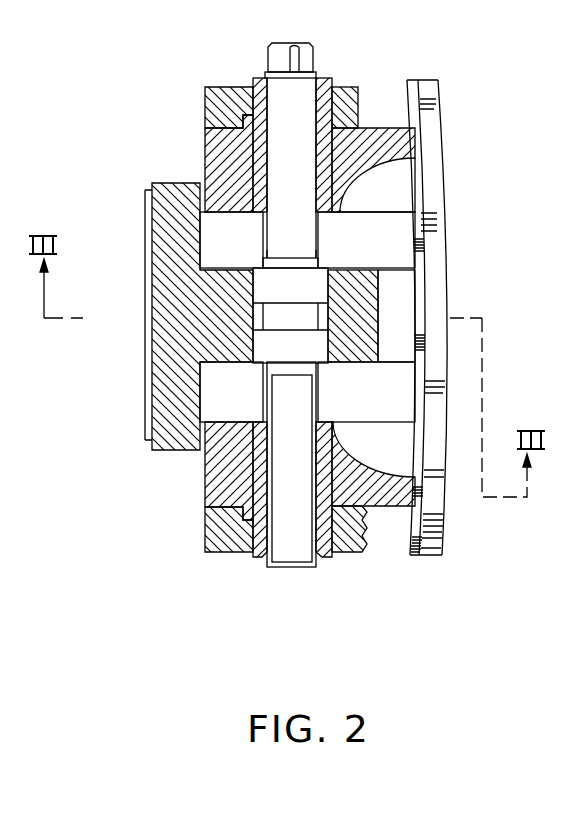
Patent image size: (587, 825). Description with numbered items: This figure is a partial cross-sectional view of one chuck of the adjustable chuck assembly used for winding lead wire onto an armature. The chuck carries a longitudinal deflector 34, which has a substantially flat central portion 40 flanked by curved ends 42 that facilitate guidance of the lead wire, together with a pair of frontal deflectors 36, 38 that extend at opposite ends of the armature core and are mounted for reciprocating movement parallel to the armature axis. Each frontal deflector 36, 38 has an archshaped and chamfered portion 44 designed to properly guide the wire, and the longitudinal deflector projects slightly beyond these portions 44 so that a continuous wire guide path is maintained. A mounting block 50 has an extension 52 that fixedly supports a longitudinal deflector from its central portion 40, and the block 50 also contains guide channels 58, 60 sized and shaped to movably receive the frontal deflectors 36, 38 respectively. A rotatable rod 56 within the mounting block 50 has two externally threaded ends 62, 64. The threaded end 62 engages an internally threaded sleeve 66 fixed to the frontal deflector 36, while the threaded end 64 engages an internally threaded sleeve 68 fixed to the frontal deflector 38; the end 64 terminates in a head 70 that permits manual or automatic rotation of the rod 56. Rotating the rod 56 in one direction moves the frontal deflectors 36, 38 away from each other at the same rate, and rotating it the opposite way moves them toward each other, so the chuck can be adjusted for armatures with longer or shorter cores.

The longitudinal deflector 34 is at (444, 154).
The frontal deflector 36 is at (393, 509).
The frontal deflector 38 is at (377, 128).
The central portion 40 is at (438, 273).
The ends 42 is at (430, 90).
The archshaped and chamfered portion 44 is at (393, 190).
The mounting block 50 is at (182, 300).
The extension 52 is at (367, 343).
The rotatable rod 56 is at (260, 268).
The guide channel 58 is at (213, 390).
The guide channel 60 is at (212, 255).
The externally threaded end 62 is at (290, 540).
The externally threaded end 64 is at (305, 88).
The internally threaded sleeve 66 is at (258, 478).
The internally threaded sleeve 68 is at (252, 163).
The head 70 is at (277, 59).